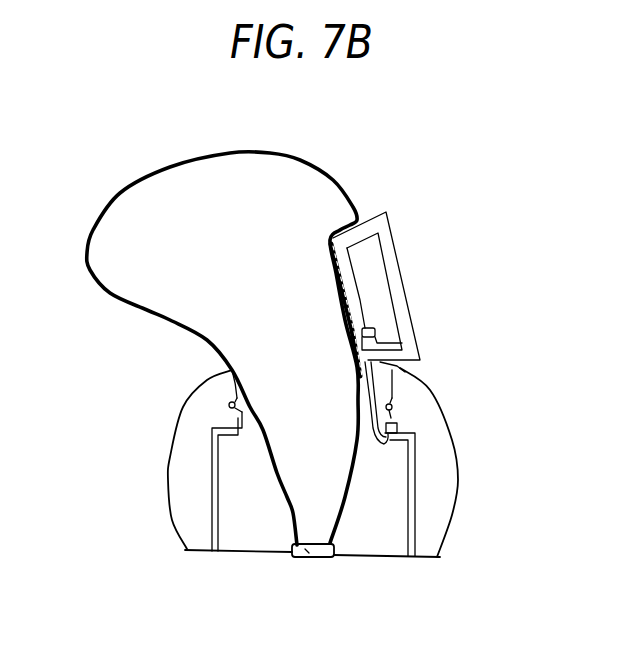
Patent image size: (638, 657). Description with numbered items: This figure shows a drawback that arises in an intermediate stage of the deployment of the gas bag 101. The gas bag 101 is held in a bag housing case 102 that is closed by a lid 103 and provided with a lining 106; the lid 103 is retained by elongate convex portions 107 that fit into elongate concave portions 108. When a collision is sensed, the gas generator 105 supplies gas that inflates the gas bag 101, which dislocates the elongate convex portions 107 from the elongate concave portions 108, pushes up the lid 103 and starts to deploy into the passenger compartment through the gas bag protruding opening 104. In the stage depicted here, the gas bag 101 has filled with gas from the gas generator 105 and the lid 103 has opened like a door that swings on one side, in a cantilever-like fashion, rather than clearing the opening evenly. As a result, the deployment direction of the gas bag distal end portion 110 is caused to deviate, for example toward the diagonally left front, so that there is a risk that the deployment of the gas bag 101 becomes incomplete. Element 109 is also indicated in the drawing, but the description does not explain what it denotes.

The gas bag 101 is at (340, 497).
The bag housing case 102 is at (443, 477).
The lid 103 is at (400, 290).
The gas bag protruding opening 104 is at (230, 370).
The gas generator 105 is at (302, 558).
The lining 106 is at (408, 513).
The elongate convex portion 107 is at (357, 223).
The elongate concave portion 108 is at (228, 403).
The thin sheet 109 is at (397, 380).
The gas bag distal end portion 110 is at (182, 167).